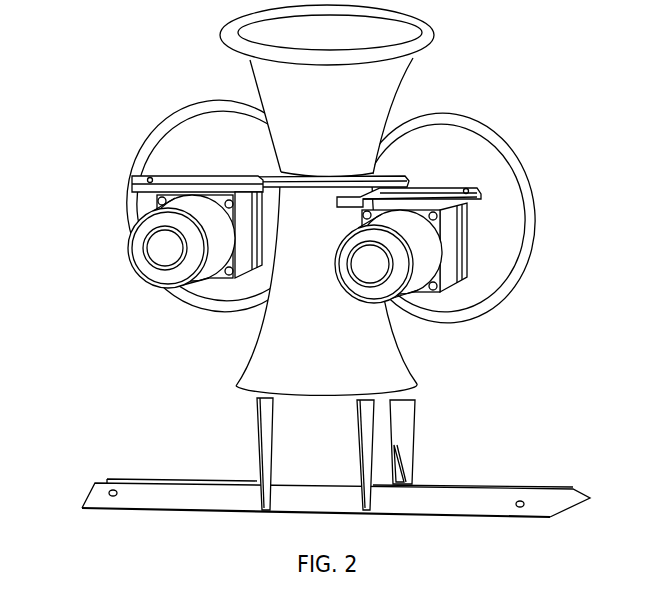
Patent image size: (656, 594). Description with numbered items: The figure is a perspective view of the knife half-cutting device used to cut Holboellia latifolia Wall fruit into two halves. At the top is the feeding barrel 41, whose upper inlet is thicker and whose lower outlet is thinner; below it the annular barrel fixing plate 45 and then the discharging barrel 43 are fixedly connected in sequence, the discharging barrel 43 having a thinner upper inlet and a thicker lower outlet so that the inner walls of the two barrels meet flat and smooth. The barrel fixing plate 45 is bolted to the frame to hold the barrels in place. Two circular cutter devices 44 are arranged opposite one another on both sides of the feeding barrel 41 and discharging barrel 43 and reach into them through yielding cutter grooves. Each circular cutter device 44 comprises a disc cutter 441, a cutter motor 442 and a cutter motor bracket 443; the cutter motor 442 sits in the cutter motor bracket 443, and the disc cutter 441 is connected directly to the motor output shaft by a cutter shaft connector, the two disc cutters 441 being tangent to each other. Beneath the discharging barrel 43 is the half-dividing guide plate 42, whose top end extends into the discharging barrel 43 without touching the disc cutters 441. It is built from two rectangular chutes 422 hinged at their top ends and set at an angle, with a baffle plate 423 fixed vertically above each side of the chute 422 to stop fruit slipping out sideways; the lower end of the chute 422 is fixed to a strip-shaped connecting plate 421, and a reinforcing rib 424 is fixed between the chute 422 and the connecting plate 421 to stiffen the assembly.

The feeding barrel 41 is at (290, 80).
The half-dividing guide plate 42 is at (287, 423).
The discharging barrel 43 is at (297, 312).
The circular cutter device 44 is at (158, 248).
The barrel fixing plate 45 is at (297, 183).
The connecting plate 421 is at (433, 502).
The chute 422 is at (330, 476).
The baffle plate 423 is at (397, 405).
The reinforcing rib 424 is at (415, 470).
The disc cutter 441 is at (447, 150).
The cutter motor 442 is at (420, 258).
The cutter motor bracket 443 is at (463, 192).